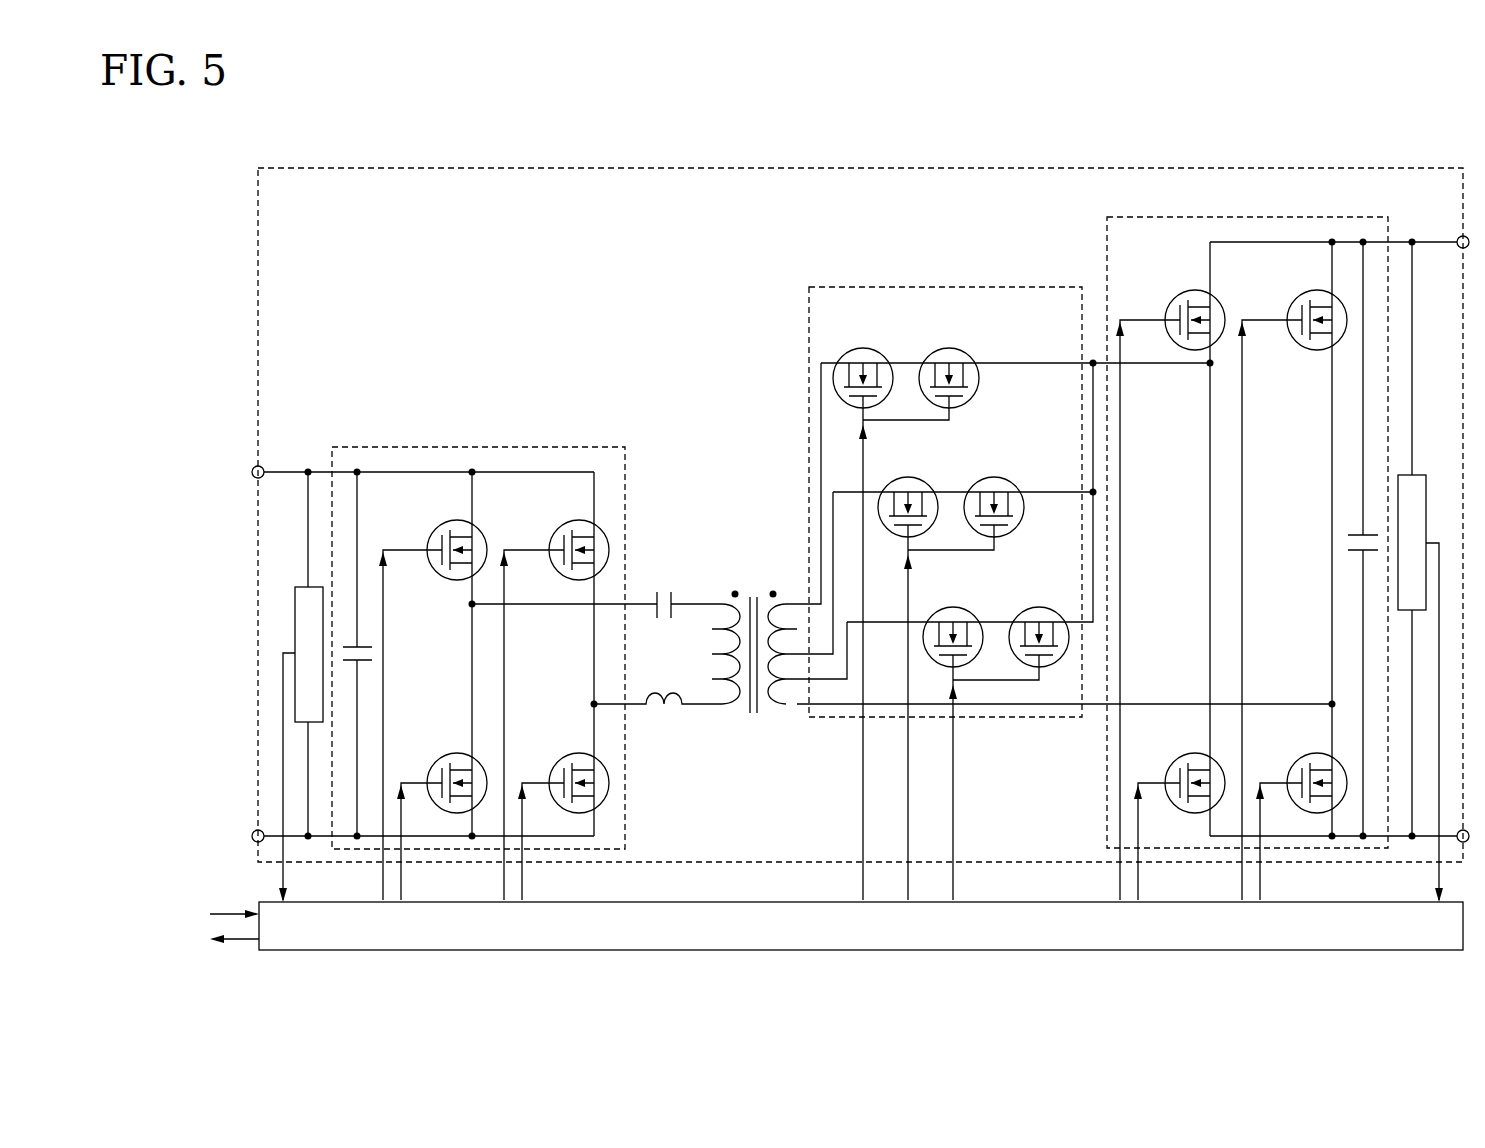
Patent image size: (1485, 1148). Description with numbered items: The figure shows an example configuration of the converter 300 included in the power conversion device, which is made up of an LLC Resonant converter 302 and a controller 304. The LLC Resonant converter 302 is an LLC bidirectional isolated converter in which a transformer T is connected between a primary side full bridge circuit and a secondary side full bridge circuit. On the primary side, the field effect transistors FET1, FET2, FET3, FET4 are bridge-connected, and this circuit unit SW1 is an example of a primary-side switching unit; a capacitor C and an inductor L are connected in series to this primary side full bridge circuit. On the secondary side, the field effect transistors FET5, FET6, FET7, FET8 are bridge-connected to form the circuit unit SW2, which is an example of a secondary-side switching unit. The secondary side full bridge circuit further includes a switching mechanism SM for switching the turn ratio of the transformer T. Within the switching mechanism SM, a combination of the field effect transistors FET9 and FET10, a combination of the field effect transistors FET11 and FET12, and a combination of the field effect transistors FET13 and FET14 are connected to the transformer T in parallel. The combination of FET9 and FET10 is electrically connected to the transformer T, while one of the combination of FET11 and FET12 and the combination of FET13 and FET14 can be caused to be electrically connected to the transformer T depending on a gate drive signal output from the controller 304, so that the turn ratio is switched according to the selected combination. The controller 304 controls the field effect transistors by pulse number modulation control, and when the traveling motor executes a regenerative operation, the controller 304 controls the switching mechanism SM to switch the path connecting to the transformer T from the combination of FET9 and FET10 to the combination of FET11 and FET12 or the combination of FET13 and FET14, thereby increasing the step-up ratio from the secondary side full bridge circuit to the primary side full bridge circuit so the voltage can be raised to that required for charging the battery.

The converter 300 is at (299, 148).
The LLC Resonant converter 302 is at (1402, 168).
The controller 304 is at (1338, 902).
The circuit unit SW1 is at (560, 447).
The circuit unit SW2 is at (1322, 217).
The switching mechanism SM is at (1030, 287).
The field effect transistor FET1 is at (441, 523).
The field effect transistor FET2 is at (563, 523).
The field effect transistor FET3 is at (441, 756).
The field effect transistor FET4 is at (563, 756).
The field effect transistor FET5 is at (1178, 294).
The field effect transistor FET6 is at (1300, 294).
The field effect transistor FET7 is at (1178, 757).
The field effect transistor FET8 is at (1300, 757).
The field effect transistor FET9 is at (863, 348).
The field effect transistor FET10 is at (949, 348).
The field effect transistor FET11 is at (908, 477).
The field effect transistor FET12 is at (994, 477).
The field effect transistor FET13 is at (953, 607).
The field effect transistor FET14 is at (1039, 607).
The capacitor C is at (677, 590).
The inductor L is at (669, 680).
The transformer T is at (783, 600).